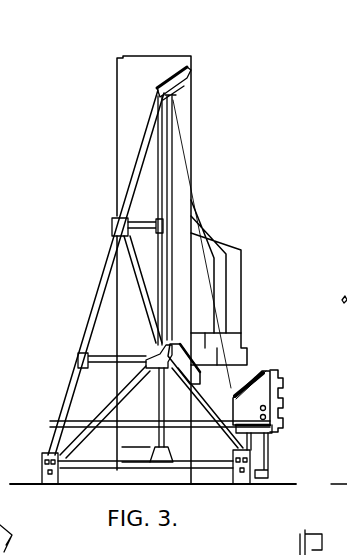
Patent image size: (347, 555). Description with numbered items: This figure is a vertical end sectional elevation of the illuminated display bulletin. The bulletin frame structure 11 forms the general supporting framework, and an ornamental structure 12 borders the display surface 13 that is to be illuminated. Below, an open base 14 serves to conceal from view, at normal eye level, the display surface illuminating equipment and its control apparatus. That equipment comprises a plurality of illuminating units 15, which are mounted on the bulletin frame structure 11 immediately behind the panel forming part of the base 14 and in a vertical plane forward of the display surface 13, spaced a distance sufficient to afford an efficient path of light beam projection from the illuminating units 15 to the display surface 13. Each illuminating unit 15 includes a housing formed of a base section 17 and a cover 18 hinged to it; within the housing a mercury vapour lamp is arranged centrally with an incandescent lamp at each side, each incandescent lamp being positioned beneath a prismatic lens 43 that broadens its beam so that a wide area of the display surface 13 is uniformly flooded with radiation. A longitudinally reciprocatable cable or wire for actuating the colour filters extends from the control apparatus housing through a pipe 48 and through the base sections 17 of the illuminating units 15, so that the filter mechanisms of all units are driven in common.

The bulletin frame structure 11 is at (93, 316).
The ornamental structure 12 is at (191, 120).
The display surface 13 is at (346, 168).
The open base 14 is at (346, 398).
The illuminating unit 15 is at (252, 409).
The base section 17 is at (276, 395).
The cover 18 is at (263, 372).
The lens 43 is at (233, 385).
The pipe 48 is at (273, 428).